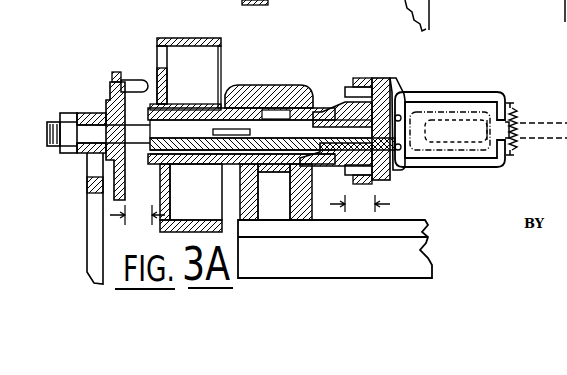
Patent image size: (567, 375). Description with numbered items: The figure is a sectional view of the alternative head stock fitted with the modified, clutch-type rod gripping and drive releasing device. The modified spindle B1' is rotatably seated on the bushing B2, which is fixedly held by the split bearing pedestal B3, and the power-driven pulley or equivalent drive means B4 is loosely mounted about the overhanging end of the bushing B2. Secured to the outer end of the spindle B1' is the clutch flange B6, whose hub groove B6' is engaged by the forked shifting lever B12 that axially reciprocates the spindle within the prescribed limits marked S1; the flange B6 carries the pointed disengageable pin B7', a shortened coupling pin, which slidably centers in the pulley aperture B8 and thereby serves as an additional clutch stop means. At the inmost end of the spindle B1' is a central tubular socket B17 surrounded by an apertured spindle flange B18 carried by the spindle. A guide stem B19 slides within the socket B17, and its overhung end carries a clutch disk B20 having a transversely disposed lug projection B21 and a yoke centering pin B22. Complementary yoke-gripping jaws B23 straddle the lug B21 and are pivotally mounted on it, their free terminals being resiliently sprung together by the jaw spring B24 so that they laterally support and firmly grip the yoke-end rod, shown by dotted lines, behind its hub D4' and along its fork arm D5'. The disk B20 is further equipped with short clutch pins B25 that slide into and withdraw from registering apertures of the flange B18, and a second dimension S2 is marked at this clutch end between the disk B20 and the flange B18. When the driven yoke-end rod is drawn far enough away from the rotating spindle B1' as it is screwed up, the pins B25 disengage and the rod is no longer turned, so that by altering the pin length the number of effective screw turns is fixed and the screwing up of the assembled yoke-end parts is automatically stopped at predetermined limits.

The modified spindle B1' is at (98, 146).
The bushing B2 is at (295, 110).
The split bearing pedestal B3 is at (307, 108).
The power-driven pulley B4 is at (193, 38).
The clutch flange B6 is at (86, 124).
The hub groove B6' is at (64, 116).
The pointed disengageable pin B7' is at (120, 60).
The pulley aperture B8 is at (157, 76).
The forked shifting lever B12 is at (90, 214).
The central tubular socket B17 is at (180, 110).
The apertured spindle flange B18 is at (363, 78).
The guide stem B19 is at (264, 110).
The clutch disk B20 is at (392, 82).
The lug projection B21 is at (458, 163).
The yoke centering pin B22 is at (420, 128).
The yoke-gripping jaws B23 is at (477, 175).
The jaw spring B24 is at (520, 122).
The clutch pins B25 is at (368, 172).
The hub D4' is at (522, 105).
The core D5' is at (462, 98).
The stroke limits S1 is at (137, 215).
The gap S2 is at (360, 204).